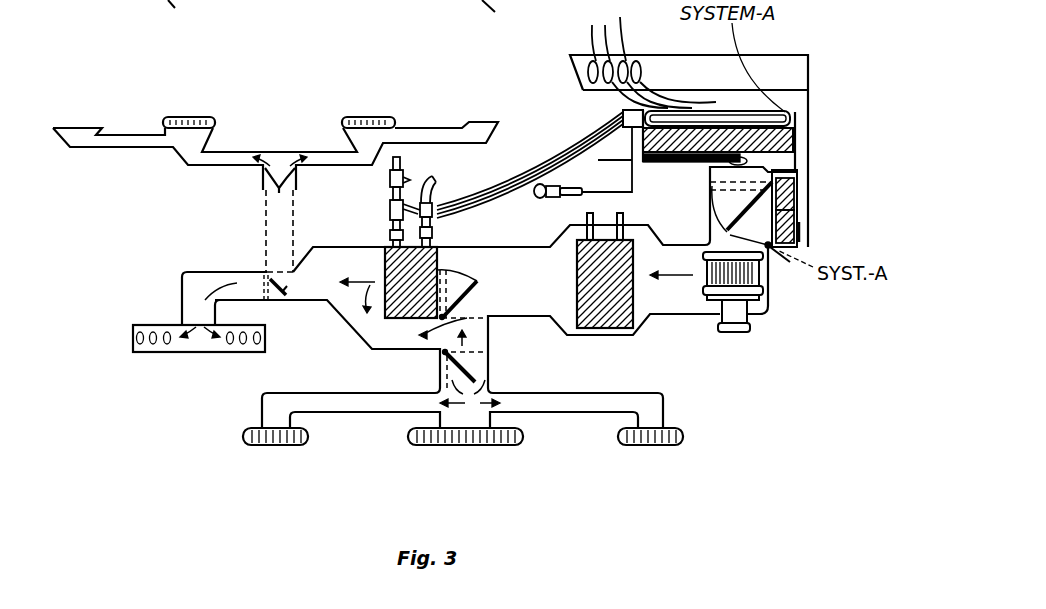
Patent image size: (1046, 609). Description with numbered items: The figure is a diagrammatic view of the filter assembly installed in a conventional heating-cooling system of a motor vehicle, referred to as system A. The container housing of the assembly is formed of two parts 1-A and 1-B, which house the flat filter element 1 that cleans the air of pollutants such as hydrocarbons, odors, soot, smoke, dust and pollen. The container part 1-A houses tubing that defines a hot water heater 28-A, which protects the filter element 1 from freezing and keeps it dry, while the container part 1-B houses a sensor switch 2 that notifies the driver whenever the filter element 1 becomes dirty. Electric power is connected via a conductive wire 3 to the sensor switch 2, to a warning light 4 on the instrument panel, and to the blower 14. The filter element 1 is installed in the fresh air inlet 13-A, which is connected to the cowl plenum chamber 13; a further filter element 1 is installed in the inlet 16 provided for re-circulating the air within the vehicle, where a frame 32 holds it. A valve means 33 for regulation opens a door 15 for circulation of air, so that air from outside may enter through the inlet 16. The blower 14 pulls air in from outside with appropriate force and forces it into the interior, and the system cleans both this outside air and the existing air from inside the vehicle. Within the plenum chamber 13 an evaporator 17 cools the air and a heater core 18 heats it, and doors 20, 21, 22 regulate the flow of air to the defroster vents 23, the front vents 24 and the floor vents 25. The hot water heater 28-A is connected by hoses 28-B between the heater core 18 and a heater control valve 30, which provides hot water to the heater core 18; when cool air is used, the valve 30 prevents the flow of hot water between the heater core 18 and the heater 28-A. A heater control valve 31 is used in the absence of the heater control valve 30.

The filter element 1 is at (792, 117).
The container part 1-A is at (793, 123).
The container part 1-B is at (795, 143).
The sensor switch 2 is at (728, 166).
The conductive wire 3 is at (623, 157).
The warning light 4 is at (563, 184).
The plenum chamber 13 is at (537, 243).
The fresh air inlet 13-A is at (790, 167).
The blower 14 is at (750, 323).
The door 15 is at (795, 195).
The inlet 16 is at (795, 225).
The evaporator 17 is at (563, 312).
The heater core 18 is at (390, 313).
The door 20 is at (460, 278).
The door 21 is at (457, 375).
The door 22 is at (277, 300).
The defroster vents 23 is at (342, 125).
The front vents 24 is at (573, 413).
The floor vents 25 is at (190, 352).
The hot water heater 28-A is at (523, 172).
The hoses 28-B is at (417, 234).
The heater control valve 30 is at (390, 187).
The heater control valve 31 is at (415, 200).
The frame 32 is at (803, 233).
The valve means 33 is at (787, 258).